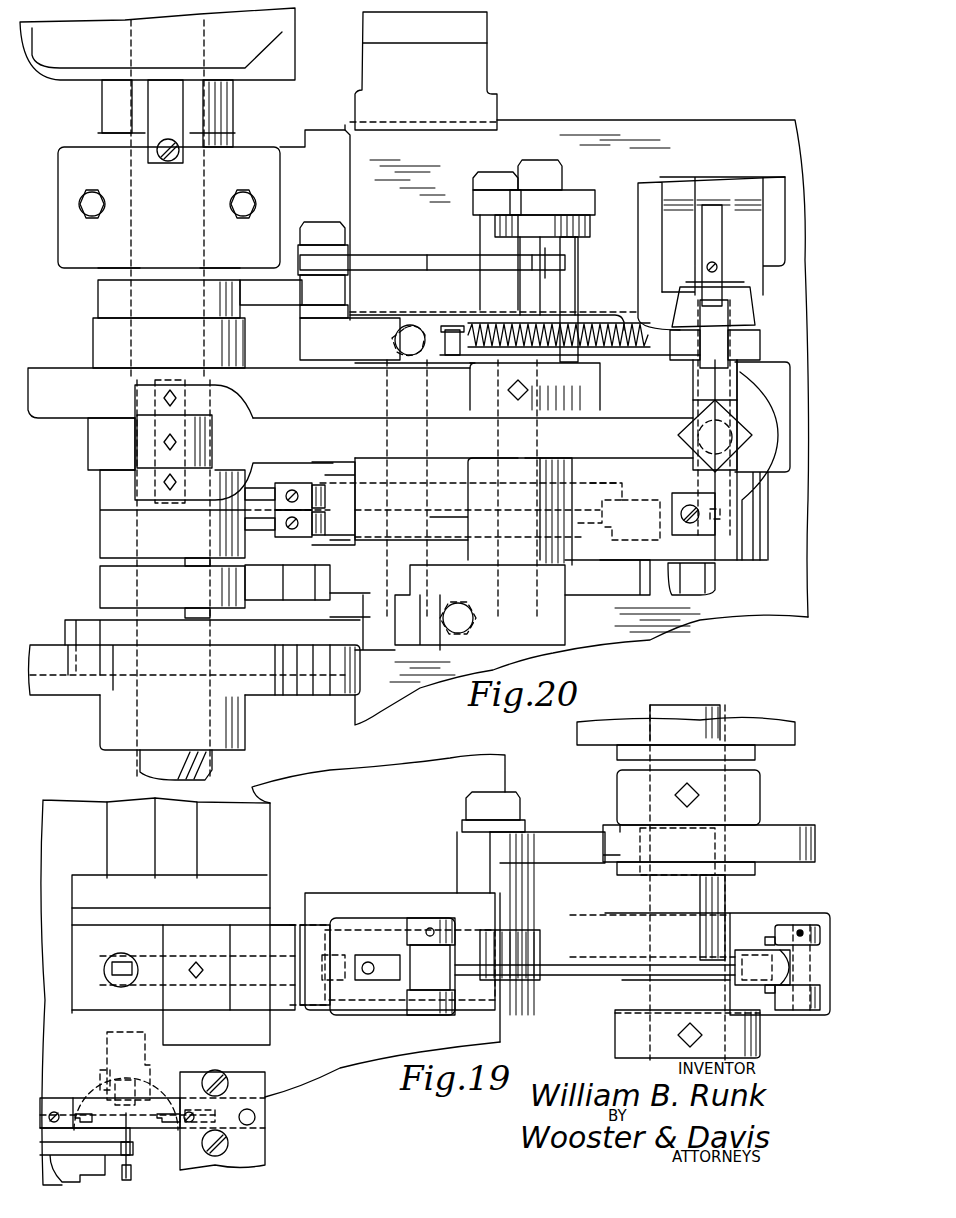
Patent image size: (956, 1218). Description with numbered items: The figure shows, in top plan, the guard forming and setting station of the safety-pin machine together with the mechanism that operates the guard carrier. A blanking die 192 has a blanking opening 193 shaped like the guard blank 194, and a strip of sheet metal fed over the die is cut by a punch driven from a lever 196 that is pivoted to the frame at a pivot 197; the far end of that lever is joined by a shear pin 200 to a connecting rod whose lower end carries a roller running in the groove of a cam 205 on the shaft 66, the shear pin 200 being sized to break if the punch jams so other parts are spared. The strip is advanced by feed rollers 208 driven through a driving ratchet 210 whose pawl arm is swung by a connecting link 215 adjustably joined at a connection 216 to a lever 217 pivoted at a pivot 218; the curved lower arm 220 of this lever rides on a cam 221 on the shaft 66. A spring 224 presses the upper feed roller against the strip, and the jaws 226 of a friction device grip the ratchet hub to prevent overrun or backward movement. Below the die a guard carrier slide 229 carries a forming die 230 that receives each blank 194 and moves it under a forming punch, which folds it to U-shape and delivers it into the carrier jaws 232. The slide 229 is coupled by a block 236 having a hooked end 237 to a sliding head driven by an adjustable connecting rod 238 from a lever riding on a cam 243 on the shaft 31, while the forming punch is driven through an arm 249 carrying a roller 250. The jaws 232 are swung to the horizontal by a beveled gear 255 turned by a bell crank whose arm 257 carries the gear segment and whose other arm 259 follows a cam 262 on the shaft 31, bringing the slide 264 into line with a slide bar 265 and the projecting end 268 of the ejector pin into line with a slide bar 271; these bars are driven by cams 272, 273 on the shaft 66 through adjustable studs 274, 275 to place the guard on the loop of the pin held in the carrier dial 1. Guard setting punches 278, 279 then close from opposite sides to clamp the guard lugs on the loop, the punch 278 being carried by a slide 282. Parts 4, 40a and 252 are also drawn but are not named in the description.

In FIG. 19, the pin carrier dial 1 is at (137, 1164).
In FIG. 19, the bed 4 is at (85, 1155).
In FIG. 19, the shaft 31 is at (728, 897).
In FIG. 19, the rod 40a is at (122, 1135).
In FIG. 20, the shaft 66 is at (212, 763).
In FIG. 19, the blanking die 192 is at (193, 937).
In FIG. 19, the blanking opening 193 is at (196, 979).
In FIG. 19, the guard blank 194 is at (118, 976).
In FIG. 20, the lever 196 is at (598, 425).
In FIG. 20, the pivot 197 is at (520, 567).
In FIG. 20, the shear pin 200 is at (163, 428).
In FIG. 20, the cam 205 is at (55, 370).
In FIG. 20, the feed rollers 208 is at (585, 392).
In FIG. 20, the driving ratchet 210 is at (583, 231).
In FIG. 20, the connecting link 215 is at (427, 264).
In FIG. 20, the adjustable connection 216 is at (315, 238).
In FIG. 20, the lever 217 is at (340, 293).
In FIG. 20, the pivot 218 is at (326, 362).
In FIG. 20, the curved lower arm 220 is at (248, 290).
In FIG. 20, the cam 221 is at (98, 298).
In FIG. 20, the spring 224 is at (605, 350).
In FIG. 20, the jaws 226 is at (477, 208).
In FIG. 20, the guard carrier slide 229 is at (716, 347).
In FIG. 19, the guard carrier slide 229 is at (250, 962).
In FIG. 19, the forming die 230 is at (121, 953).
In FIG. 19, the carrier jaws 232 is at (126, 1092).
In FIG. 20, the block 236 is at (723, 255).
In FIG. 19, the block 236 is at (385, 976).
In FIG. 19, the hooked end 237 is at (327, 985).
In FIG. 19, the adjustable connecting rod 238 is at (583, 960).
In FIG. 19, the cam 243 is at (632, 993).
In FIG. 20, the arm 249 is at (212, 632).
In FIG. 20, the roller 250 is at (62, 668).
In FIG. 20, the block 252 is at (88, 692).
In FIG. 20, the beveled gear 255 is at (756, 311).
In FIG. 19, the beveled gear 255 is at (302, 1008).
In FIG. 20, the arm 257 is at (640, 238).
In FIG. 19, the arm 257 is at (397, 893).
In FIG. 19, the arm 259 is at (565, 840).
In FIG. 19, the cam 262 is at (773, 835).
In FIG. 20, the slide 264 is at (632, 503).
In FIG. 19, the slide 264 is at (107, 1057).
In FIG. 20, the slide bar 265 is at (585, 482).
In FIG. 20, the projecting end of ejector pin 268 is at (598, 528).
In FIG. 20, the slide bar 271 is at (607, 577).
In FIG. 20, the cam 272 is at (100, 496).
In FIG. 20, the cam 273 is at (100, 540).
In FIG. 20, the adjustable stud 274 is at (257, 485).
In FIG. 20, the adjustable stud 275 is at (262, 536).
In FIG. 19, the guard setting punch 278 is at (80, 1110).
In FIG. 19, the guard setting punch 279 is at (165, 1108).
In FIG. 19, the slide 282 is at (163, 1132).